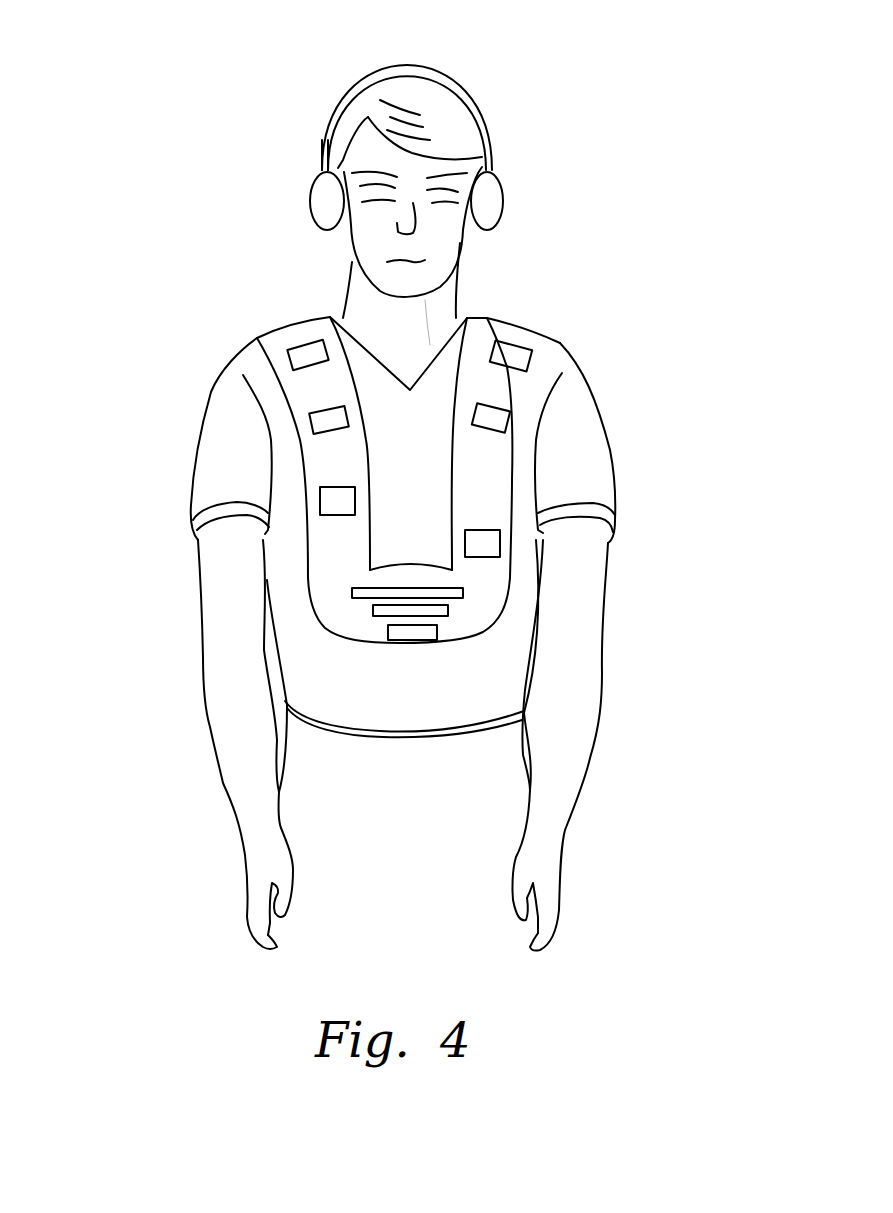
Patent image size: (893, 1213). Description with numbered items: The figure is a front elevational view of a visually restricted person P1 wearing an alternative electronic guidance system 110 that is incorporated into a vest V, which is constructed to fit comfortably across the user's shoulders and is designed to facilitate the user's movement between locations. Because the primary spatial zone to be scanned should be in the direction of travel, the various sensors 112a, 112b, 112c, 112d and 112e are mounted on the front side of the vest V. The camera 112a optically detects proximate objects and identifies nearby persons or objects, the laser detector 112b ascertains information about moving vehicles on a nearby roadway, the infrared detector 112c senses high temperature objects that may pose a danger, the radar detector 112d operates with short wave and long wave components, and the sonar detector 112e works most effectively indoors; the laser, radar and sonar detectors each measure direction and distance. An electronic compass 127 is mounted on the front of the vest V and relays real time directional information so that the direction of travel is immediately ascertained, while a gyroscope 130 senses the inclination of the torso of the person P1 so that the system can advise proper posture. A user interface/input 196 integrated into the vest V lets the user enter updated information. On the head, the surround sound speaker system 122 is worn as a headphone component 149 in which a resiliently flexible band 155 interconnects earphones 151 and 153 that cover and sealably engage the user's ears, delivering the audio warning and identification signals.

The electronic guidance system 110 is at (287, 289).
The camera 112a is at (289, 361).
The laser detector 112b is at (448, 610).
The infrared detector 112c is at (352, 593).
The radar detector 112d is at (503, 433).
The sonar detector 112e is at (437, 632).
The electronic compass 127 is at (312, 425).
The user interface/input 196 is at (318, 498).
The gyroscope 130 is at (500, 540).
The headphone component 149 is at (355, 93).
The resiliently flexible band 155 is at (462, 87).
The surround sound speaker system 122 is at (327, 126).
The earphone 153 is at (311, 206).
The earphone 151 is at (518, 194).
The vest V is at (398, 523).
The visually restricted person P1 is at (603, 413).